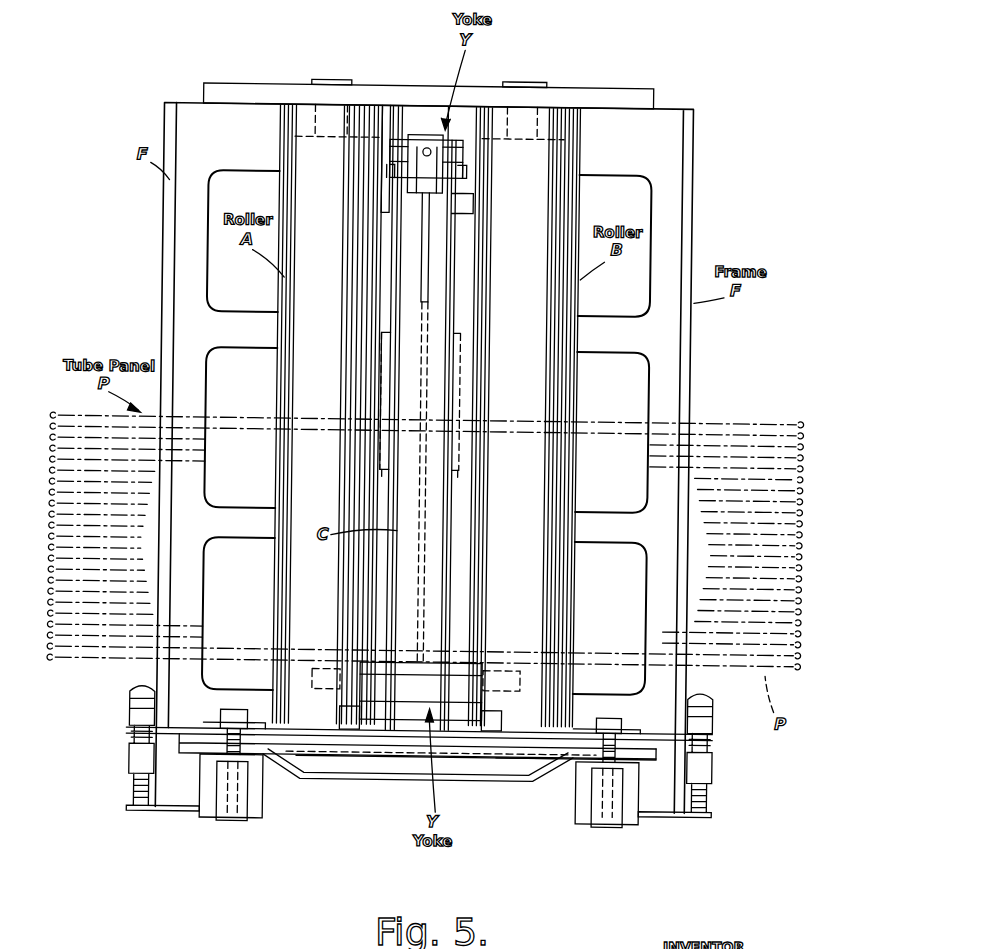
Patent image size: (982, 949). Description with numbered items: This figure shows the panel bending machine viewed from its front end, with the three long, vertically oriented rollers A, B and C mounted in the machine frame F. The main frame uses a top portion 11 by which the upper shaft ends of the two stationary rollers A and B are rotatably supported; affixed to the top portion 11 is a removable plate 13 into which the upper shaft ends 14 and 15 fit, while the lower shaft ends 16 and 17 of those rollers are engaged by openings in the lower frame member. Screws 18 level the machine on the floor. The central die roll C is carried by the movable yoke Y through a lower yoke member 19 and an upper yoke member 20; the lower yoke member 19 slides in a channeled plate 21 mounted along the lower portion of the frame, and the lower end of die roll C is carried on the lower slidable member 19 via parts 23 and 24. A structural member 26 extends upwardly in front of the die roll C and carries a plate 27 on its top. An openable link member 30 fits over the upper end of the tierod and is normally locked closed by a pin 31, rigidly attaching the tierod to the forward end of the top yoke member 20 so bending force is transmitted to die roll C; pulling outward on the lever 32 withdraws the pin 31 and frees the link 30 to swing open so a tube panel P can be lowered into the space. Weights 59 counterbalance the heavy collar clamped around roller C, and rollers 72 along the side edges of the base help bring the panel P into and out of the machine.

The top portion 11 is at (665, 106).
The removable plate 13 is at (406, 90).
The upper shaft end 14 is at (330, 91).
The upper shaft end 15 is at (514, 92).
The lower shaft end 16 is at (324, 722).
The lower shaft end 17 is at (521, 724).
The screws 18 is at (221, 716).
The lower yoke member 19 is at (410, 712).
The upper yoke member 20 is at (395, 135).
The channeled plate 21 is at (463, 729).
The part 23 is at (393, 694).
The part 24 is at (405, 668).
The structural member 26 is at (454, 201).
The plate 27 is at (402, 173).
The openable link member 30 is at (455, 153).
The pin 31 is at (423, 148).
The lever 32 is at (423, 293).
The weights 59 is at (388, 471).
The rollers 72 is at (133, 686).